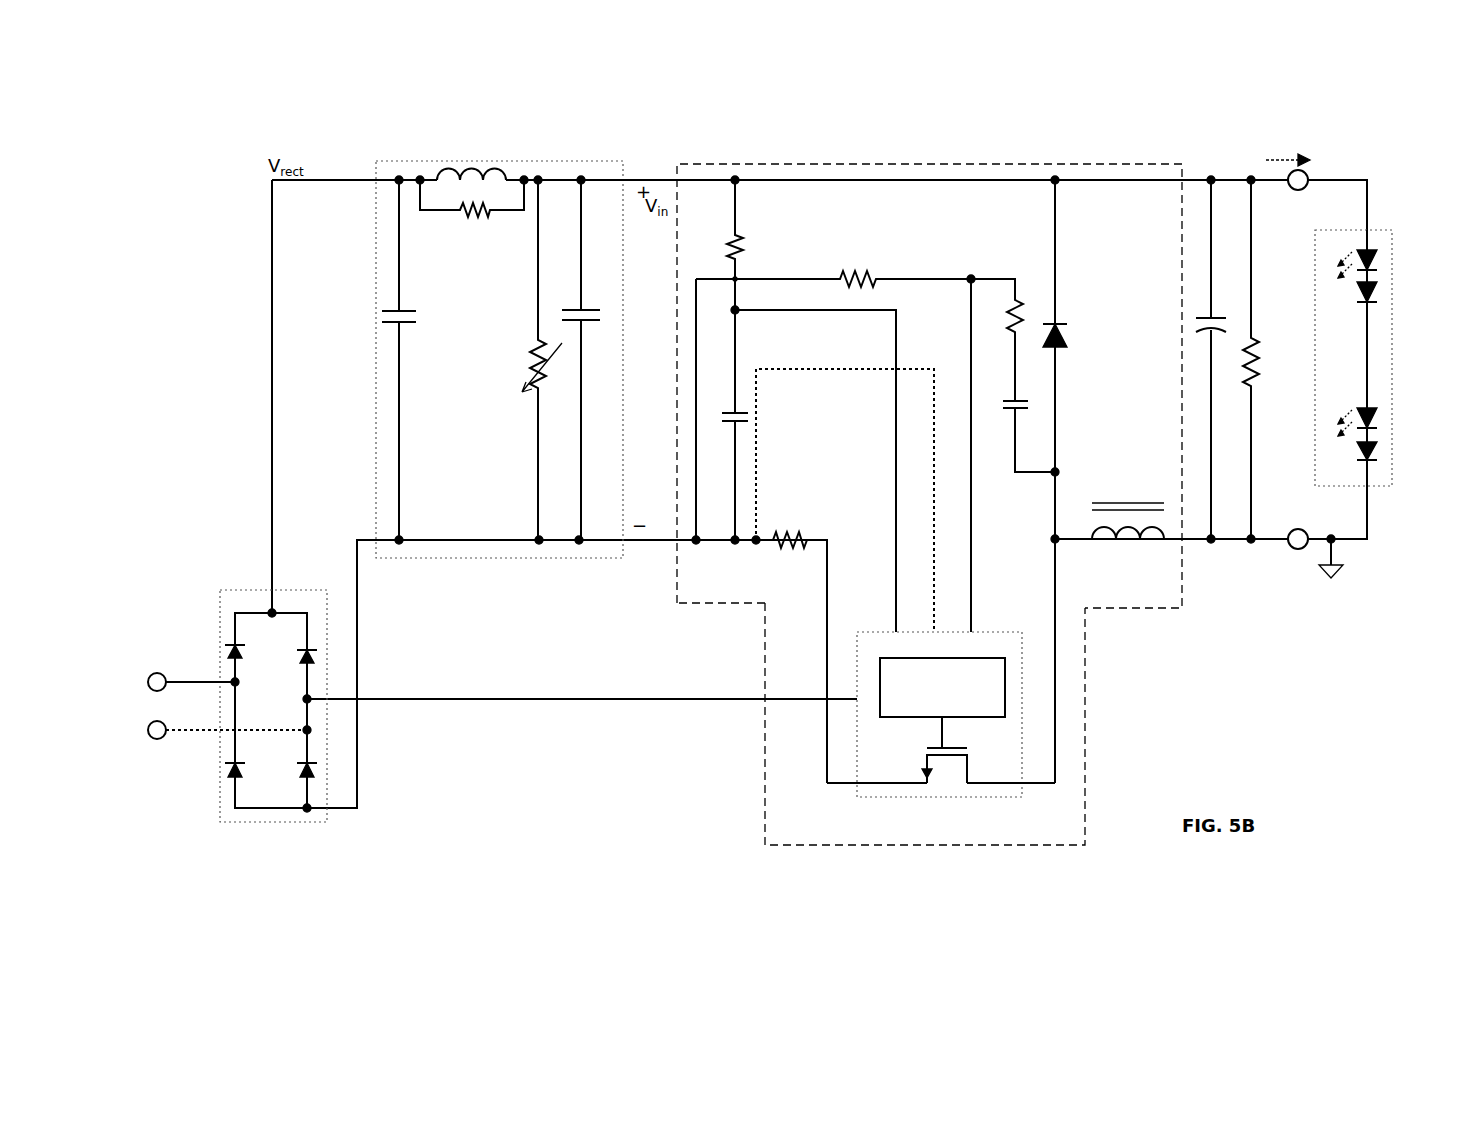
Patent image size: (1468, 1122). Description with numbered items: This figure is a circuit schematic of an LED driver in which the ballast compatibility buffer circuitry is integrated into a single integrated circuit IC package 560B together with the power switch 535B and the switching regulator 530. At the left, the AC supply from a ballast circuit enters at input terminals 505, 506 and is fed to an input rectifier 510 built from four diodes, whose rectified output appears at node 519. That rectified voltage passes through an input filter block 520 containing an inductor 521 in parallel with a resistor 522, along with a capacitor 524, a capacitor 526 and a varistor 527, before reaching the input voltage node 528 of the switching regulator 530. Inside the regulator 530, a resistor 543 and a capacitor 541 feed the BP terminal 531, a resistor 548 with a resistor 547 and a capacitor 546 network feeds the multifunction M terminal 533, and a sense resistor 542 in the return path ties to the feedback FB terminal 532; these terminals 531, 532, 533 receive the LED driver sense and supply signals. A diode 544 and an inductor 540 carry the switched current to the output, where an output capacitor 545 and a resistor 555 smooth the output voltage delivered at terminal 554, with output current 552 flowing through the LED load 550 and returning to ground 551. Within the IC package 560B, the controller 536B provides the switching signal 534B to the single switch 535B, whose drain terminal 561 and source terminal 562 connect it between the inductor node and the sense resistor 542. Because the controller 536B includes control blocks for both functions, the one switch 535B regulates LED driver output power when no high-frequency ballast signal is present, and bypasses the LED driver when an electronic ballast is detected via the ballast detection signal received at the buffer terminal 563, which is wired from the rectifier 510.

The AC input terminal 505 is at (166, 676).
The AC input terminal 506 is at (170, 726).
The input rectifier 510 is at (248, 582).
The rectified voltage node 519 is at (306, 177).
The input filter circuit 520 is at (548, 161).
The inductor 521 is at (475, 168).
The resistor 522 is at (470, 202).
The capacitor 524 is at (398, 305).
The capacitor 526 is at (582, 305).
The varistor 527 is at (520, 358).
The input voltage node 528 is at (655, 178).
The switching regulator 530 is at (1040, 153).
The BP terminal 531 is at (874, 599).
The feedback (FB) terminal 532 is at (921, 594).
The multifunction (M) terminal 533 is at (988, 597).
The switching signal 534B is at (942, 732).
The power switch 535B is at (947, 771).
The controller 536B is at (942, 687).
The inductor L1 540 is at (1128, 477).
The capacitor 541 is at (728, 410).
The sense resistor 542 is at (792, 546).
The resistor 543 is at (744, 250).
The diode 544 is at (1062, 325).
The output capacitor 545 is at (1214, 314).
The capacitor 546 is at (1005, 425).
The resistor 547 is at (1026, 310).
The resistor 548 is at (860, 272).
The LED load 550 is at (1390, 230).
The ground 551 is at (1327, 584).
The output current 552 is at (1284, 131).
The output voltage terminal 554 is at (1352, 152).
The resistor 555 is at (1258, 345).
The integrated circuit IC package 560B is at (857, 735).
The drain terminal 561 is at (1038, 808).
The source terminal 562 is at (832, 805).
The buffer terminal 563 is at (840, 690).